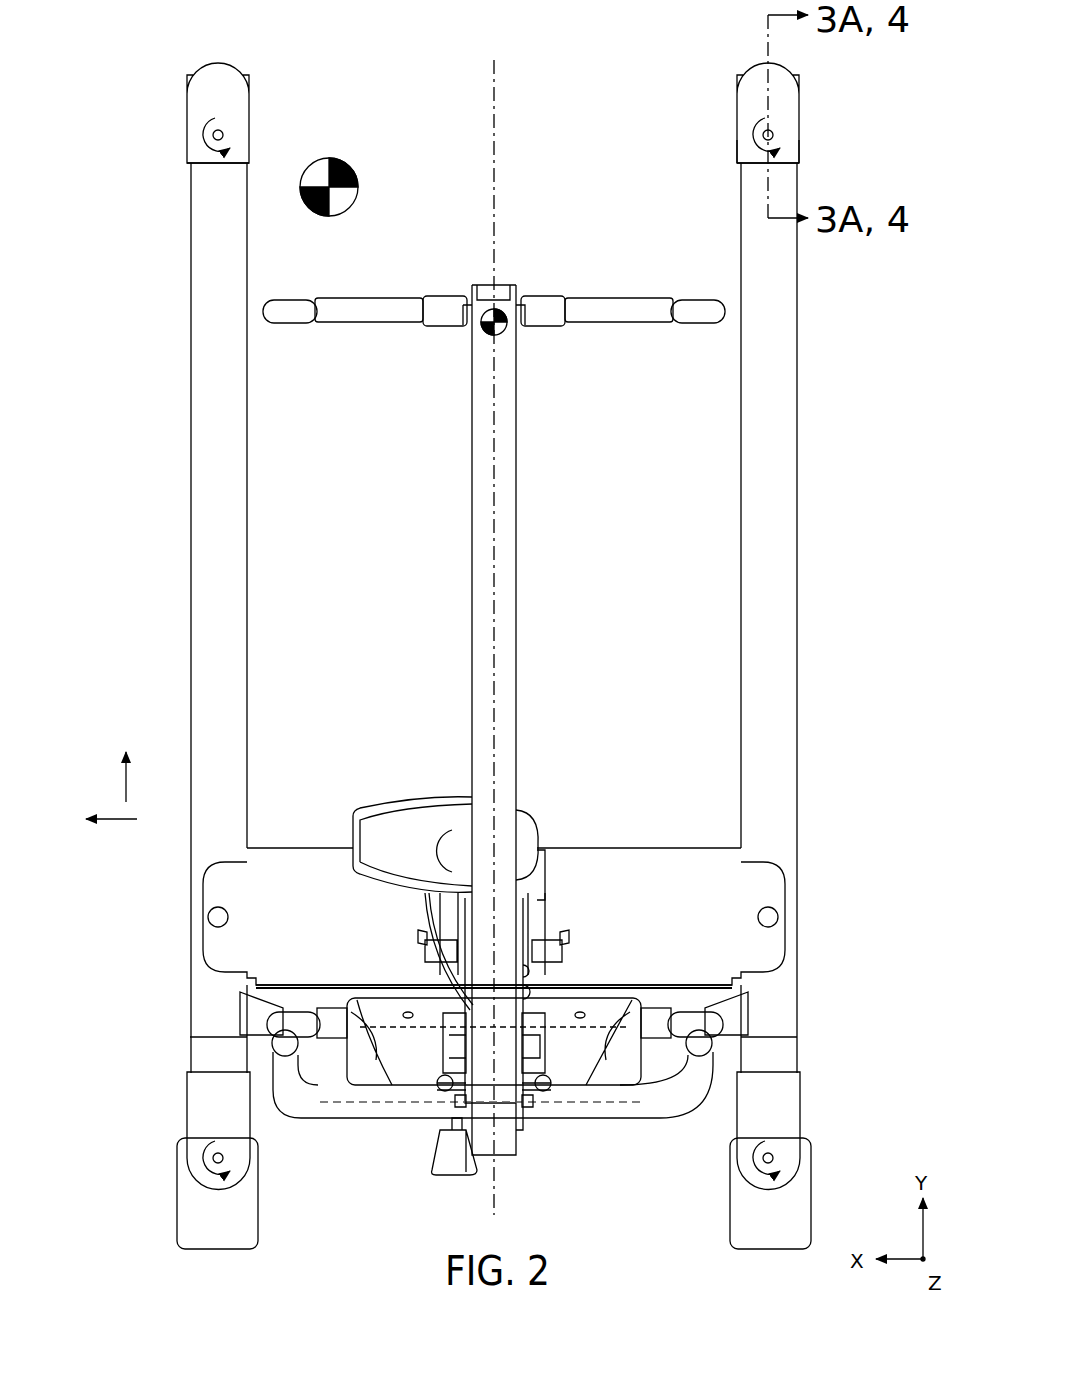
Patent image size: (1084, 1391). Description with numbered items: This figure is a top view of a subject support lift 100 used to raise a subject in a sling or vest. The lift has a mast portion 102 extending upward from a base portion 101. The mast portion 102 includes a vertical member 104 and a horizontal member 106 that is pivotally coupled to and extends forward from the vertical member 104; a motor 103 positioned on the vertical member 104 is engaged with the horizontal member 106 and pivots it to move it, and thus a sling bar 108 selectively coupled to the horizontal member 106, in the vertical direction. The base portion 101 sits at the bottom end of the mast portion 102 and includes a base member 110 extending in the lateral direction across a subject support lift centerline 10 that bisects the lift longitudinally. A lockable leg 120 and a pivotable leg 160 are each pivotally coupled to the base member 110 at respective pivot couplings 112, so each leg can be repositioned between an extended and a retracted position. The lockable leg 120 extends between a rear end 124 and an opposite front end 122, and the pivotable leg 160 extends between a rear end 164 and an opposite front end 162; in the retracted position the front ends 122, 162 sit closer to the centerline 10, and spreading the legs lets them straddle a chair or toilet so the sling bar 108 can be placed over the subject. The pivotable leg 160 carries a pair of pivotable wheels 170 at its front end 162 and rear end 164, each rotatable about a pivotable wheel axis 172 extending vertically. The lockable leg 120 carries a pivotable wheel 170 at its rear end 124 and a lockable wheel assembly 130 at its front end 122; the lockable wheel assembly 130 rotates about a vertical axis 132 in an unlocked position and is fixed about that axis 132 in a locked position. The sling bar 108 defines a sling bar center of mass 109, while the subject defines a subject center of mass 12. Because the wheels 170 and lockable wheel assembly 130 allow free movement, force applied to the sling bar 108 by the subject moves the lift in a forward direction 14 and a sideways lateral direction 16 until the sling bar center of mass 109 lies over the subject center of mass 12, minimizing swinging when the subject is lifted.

The subject support lift 100 is at (122, 85).
The subject support lift centerline 10 is at (498, 112).
The subject center of mass 12 is at (358, 187).
The forward direction 14 is at (126, 778).
The sideways lateral direction 16 is at (116, 820).
The base portion 101 is at (648, 830).
The mast portion 102 is at (552, 1138).
The motor 103 is at (388, 806).
The vertical member 104 is at (508, 1145).
The horizontal member 106 is at (472, 625).
The sling bar 108 is at (632, 272).
The sling bar center of mass 109 is at (508, 333).
The base member 110 is at (302, 860).
The pivot coupling 112 is at (208, 917).
The lockable leg 120 is at (828, 472).
The front end of lockable leg 122 is at (712, 78).
The rear end of lockable leg 124 is at (790, 1262).
The lockable wheel assembly 130 is at (828, 118).
The axis 132 is at (765, 135).
The pivotable leg 160 is at (157, 470).
The front end of pivotable leg 162 is at (258, 78).
The rear end of pivotable leg 164 is at (185, 1255).
The pivotable wheel 170 is at (185, 108).
The pivotable wheel axis 172 is at (224, 135).